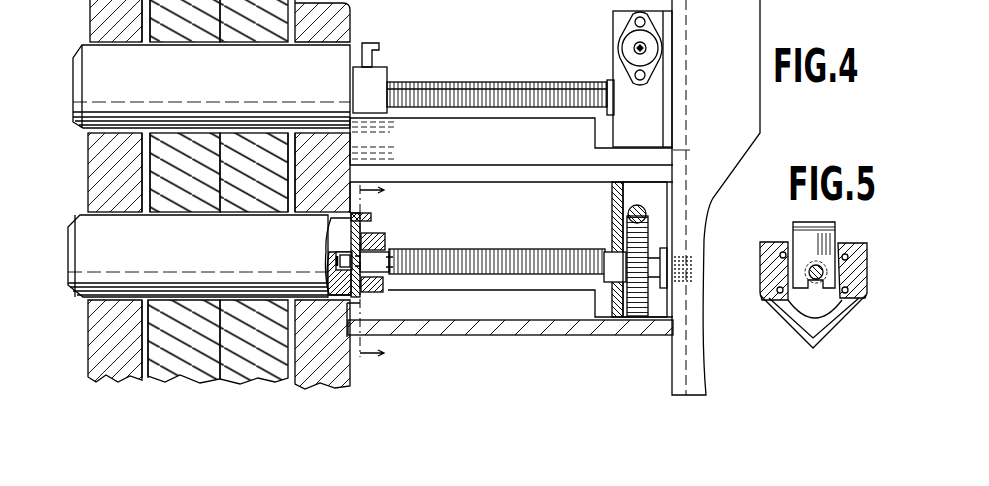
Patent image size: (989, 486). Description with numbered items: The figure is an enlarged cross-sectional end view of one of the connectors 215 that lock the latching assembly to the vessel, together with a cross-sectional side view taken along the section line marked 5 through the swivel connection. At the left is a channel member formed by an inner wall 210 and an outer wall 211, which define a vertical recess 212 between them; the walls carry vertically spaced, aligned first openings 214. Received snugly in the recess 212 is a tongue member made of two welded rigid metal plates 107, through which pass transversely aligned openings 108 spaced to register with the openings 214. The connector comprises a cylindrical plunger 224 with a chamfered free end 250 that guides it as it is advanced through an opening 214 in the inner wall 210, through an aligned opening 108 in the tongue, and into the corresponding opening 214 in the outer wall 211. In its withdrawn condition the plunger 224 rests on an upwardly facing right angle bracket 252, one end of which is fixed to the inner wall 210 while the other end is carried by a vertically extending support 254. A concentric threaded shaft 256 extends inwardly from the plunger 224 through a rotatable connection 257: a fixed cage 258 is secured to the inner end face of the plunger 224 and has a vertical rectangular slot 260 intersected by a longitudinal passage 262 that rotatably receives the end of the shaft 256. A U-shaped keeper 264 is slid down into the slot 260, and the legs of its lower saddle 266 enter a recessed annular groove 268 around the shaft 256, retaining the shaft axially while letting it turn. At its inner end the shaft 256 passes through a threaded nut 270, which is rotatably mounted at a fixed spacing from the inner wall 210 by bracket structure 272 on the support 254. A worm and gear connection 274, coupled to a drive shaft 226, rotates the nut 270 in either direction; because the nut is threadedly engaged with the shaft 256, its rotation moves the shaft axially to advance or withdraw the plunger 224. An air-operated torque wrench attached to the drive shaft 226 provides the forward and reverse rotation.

In FIG. 4, the section line 5- 5 is at (379, 270).
In FIG. 4, the rigid metal plates 107 is at (232, 318).
In FIG. 4, the openings 108 is at (213, 44).
In FIG. 4, the inner wall 210 is at (346, 33).
In FIG. 4, the outer wall 211 is at (97, 320).
In FIG. 4, the recess 212 is at (290, 46).
In FIG. 4, the first openings 214 is at (103, 212).
In FIG. 4, the connectors 215 is at (356, 45).
In FIG. 5, the plunger 224 is at (820, 303).
In FIG. 4, the drive shaft 226 is at (634, 49).
In FIG. 4, the chamfered free end 250 is at (80, 73).
In FIG. 4, the right angle bracket 252 is at (532, 148).
In FIG. 5, the right angle bracket 252 is at (788, 315).
In FIG. 4, the support 254 is at (731, 56).
In FIG. 4, the threaded shaft 256 is at (518, 252).
In FIG. 4, the rotatable connection 257 is at (397, 88).
In FIG. 4, the cage 258 is at (373, 72).
In FIG. 5, the cage 258 is at (858, 266).
In FIG. 4, the rectangular slot 260 is at (357, 280).
In FIG. 5, the rectangular slot 260 is at (835, 244).
In FIG. 4, the passage 262 is at (396, 251).
In FIG. 4, the keeper 264 is at (378, 44).
In FIG. 5, the saddle 266 is at (812, 268).
In FIG. 4, the annular groove 268 is at (391, 270).
In FIG. 4, the threaded nut 270 is at (616, 262).
In FIG. 4, the bracket structure 272 is at (611, 303).
In FIG. 4, the worm and gear connection 274 is at (647, 232).